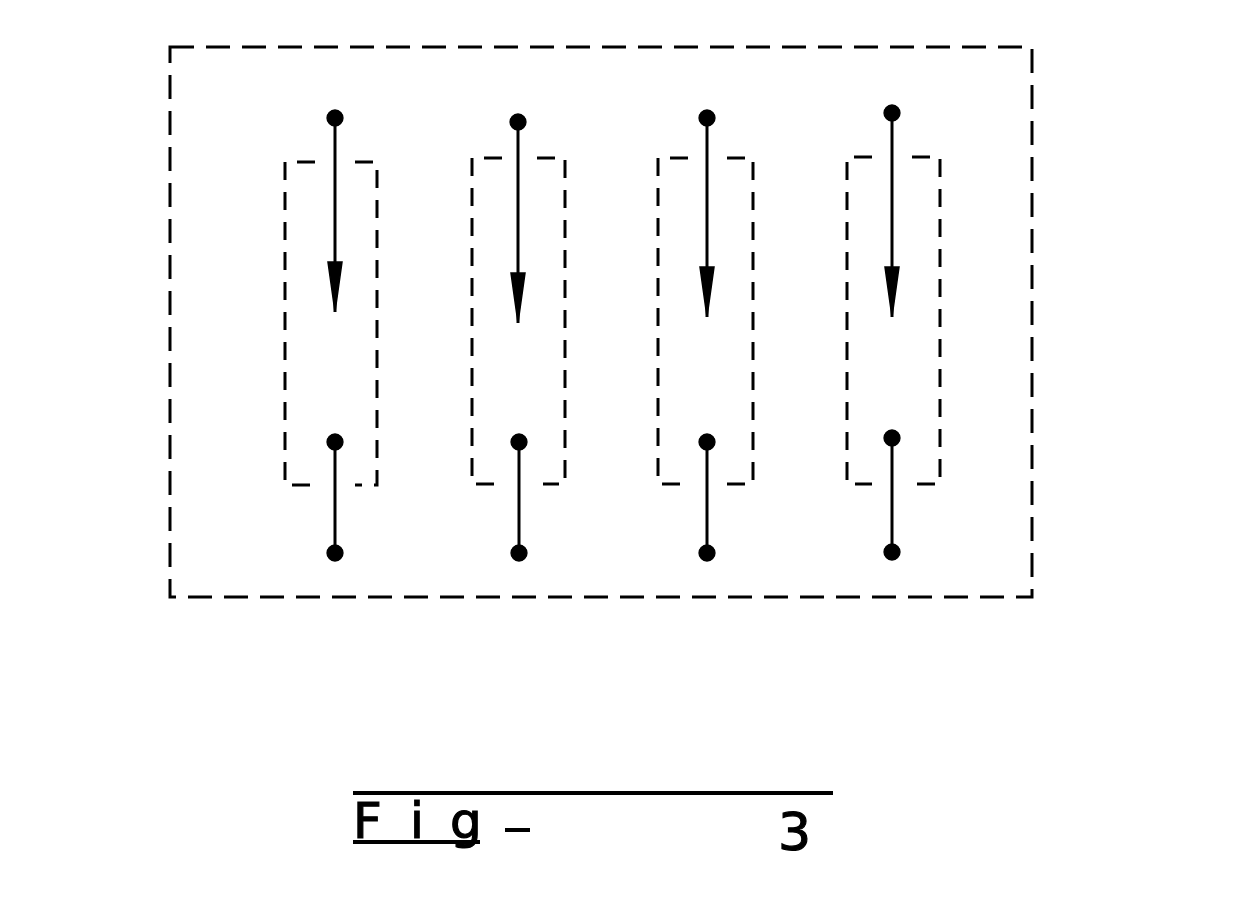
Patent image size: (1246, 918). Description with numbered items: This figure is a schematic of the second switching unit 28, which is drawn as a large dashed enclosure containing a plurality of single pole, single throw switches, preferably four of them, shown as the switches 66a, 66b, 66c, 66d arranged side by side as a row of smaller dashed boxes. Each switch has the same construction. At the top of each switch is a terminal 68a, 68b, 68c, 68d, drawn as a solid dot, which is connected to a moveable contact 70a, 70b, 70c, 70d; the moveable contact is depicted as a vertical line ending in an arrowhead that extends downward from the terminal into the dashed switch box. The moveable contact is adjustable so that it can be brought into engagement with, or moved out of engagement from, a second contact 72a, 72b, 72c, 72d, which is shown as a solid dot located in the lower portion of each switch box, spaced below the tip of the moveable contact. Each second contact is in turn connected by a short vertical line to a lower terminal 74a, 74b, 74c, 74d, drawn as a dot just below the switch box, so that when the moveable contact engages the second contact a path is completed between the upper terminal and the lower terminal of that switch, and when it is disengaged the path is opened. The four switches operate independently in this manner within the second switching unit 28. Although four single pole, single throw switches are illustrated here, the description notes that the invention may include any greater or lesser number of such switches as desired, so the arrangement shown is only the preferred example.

The second switching unit 28 is at (1050, 331).
The single pole, single throw switch 66a is at (283, 203).
The single pole, single throw switch 66b is at (470, 195).
The single pole, single throw switch 66c is at (656, 175).
The single pole, single throw switch 66d is at (845, 172).
The terminal 68a is at (333, 116).
The terminal 68b is at (516, 120).
The terminal 68c is at (705, 116).
The terminal 68d is at (890, 111).
The moveable contact 70a is at (333, 290).
The moveable contact 70b is at (516, 302).
The moveable contact 70c is at (705, 300).
The moveable contact 70d is at (890, 295).
The second contact 72a is at (333, 440).
The second contact 72b is at (517, 440).
The second contact 72c is at (705, 442).
The second contact 72d is at (890, 438).
The terminal 74a is at (333, 553).
The terminal 74b is at (517, 553).
The terminal 74c is at (705, 553).
The terminal 74d is at (890, 552).